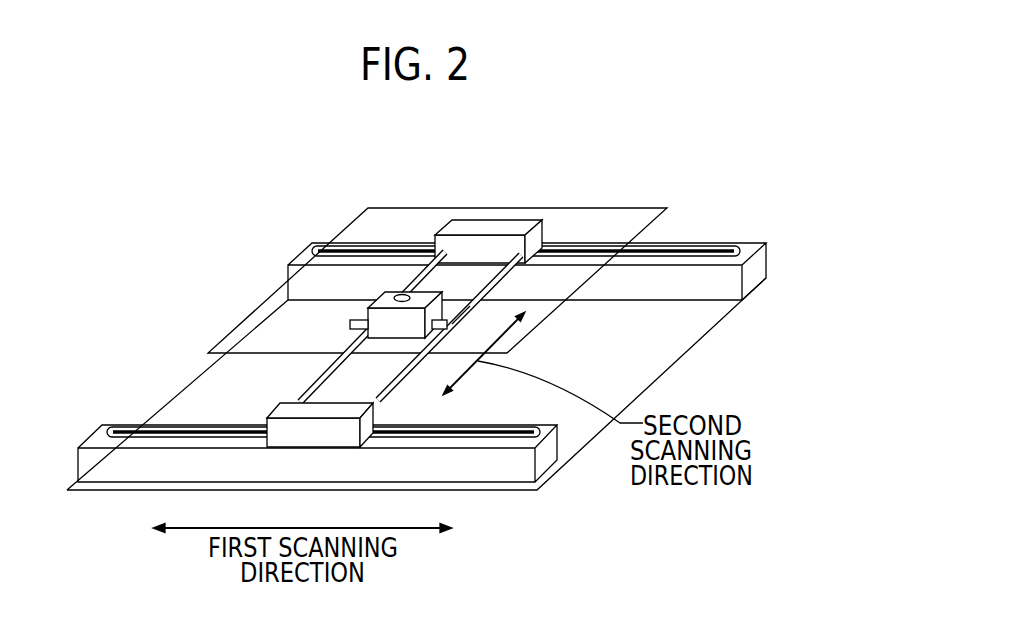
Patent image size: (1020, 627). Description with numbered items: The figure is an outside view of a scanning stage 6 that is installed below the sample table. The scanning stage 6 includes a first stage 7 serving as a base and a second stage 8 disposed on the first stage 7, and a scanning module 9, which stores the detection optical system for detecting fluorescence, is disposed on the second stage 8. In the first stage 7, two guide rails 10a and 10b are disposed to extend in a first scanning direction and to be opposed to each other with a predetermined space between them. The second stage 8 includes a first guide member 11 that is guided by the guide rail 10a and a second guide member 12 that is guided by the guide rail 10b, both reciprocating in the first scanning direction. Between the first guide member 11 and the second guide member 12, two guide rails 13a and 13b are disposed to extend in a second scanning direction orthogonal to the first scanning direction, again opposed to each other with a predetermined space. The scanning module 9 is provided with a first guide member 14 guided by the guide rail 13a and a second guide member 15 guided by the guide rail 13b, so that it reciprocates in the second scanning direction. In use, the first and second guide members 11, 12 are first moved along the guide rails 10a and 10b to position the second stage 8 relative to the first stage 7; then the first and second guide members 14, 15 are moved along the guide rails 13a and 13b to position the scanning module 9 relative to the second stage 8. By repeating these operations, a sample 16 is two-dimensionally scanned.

The scanning stage 6 is at (474, 221).
The first stage 7 is at (692, 233).
The second stage 8 is at (437, 245).
The scanning module 9 is at (383, 298).
The guide rail 10a is at (546, 427).
The guide rail 10b is at (733, 245).
The first guide member 11 is at (270, 414).
The second guide member 12 is at (480, 219).
The guide rail 13a is at (320, 379).
The guide rail 13b is at (389, 384).
The first guide member 14 is at (352, 324).
The second guide member 15 is at (462, 314).
The sample 16 is at (388, 207).